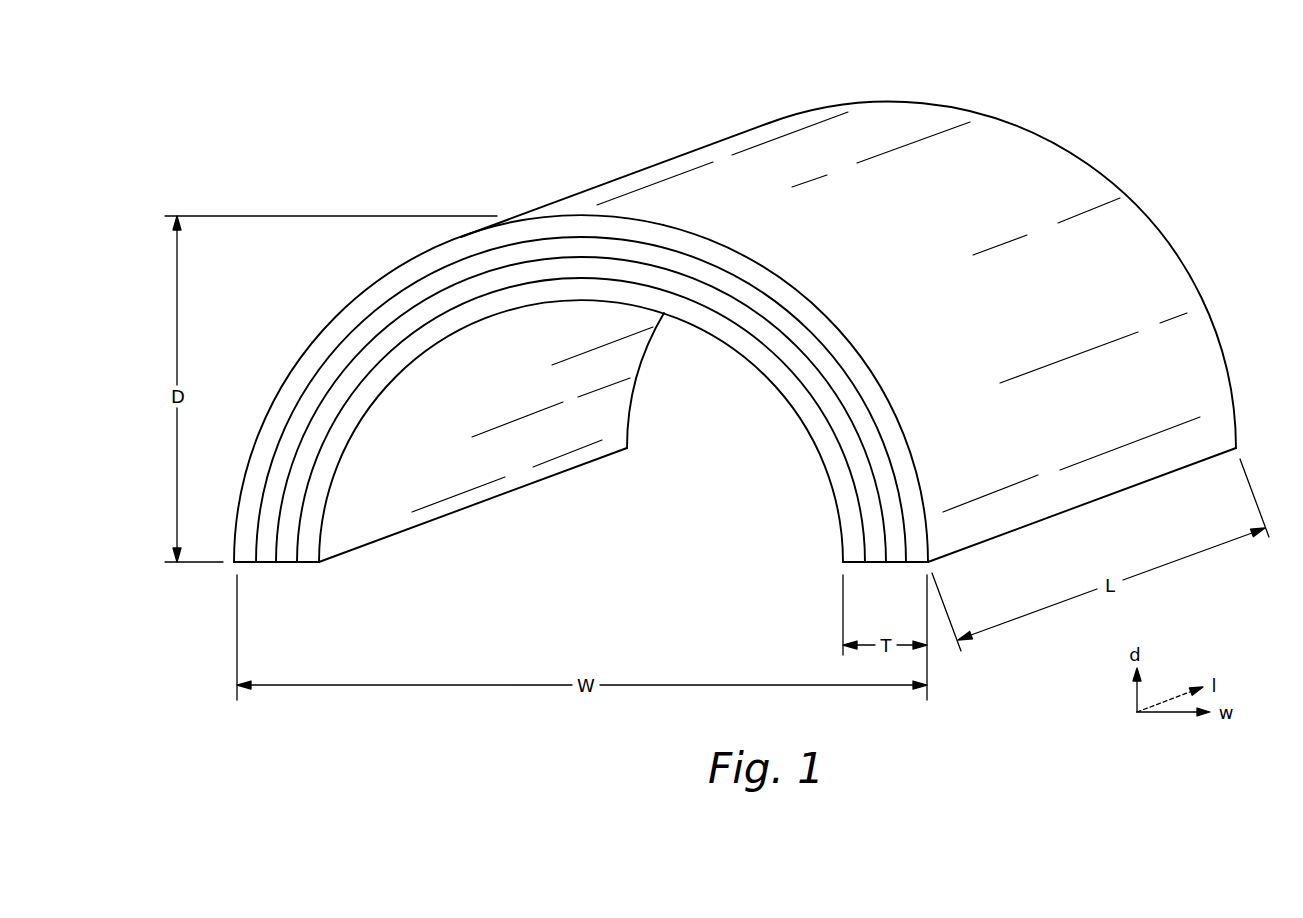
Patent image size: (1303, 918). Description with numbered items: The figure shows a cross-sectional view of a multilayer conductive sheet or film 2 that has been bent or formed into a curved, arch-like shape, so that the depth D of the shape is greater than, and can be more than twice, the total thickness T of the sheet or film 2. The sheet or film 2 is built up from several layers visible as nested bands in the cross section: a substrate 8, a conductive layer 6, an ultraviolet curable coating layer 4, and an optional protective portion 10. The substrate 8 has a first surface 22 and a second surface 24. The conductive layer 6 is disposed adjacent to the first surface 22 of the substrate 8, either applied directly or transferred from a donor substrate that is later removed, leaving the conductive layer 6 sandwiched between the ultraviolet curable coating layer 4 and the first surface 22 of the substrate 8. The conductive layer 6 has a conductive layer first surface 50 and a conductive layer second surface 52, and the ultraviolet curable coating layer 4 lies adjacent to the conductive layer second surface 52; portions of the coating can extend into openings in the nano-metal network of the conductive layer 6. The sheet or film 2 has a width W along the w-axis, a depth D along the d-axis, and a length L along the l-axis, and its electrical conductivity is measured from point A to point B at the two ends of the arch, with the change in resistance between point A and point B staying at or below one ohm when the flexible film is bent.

The multilayer sheet or film 2 is at (1162, 166).
The ultraviolet curable coating layer 4 is at (842, 483).
The conductive layer 6 is at (825, 398).
The substrate 8 is at (824, 362).
The protective portion 10 is at (798, 305).
The first surface of the substrate 22 is at (337, 385).
The second surface of the substrate 24 is at (365, 322).
The conductive layer first surface 50 is at (353, 417).
The conductive layer second surface 52 is at (320, 477).
The point A is at (320, 563).
The point B is at (843, 565).